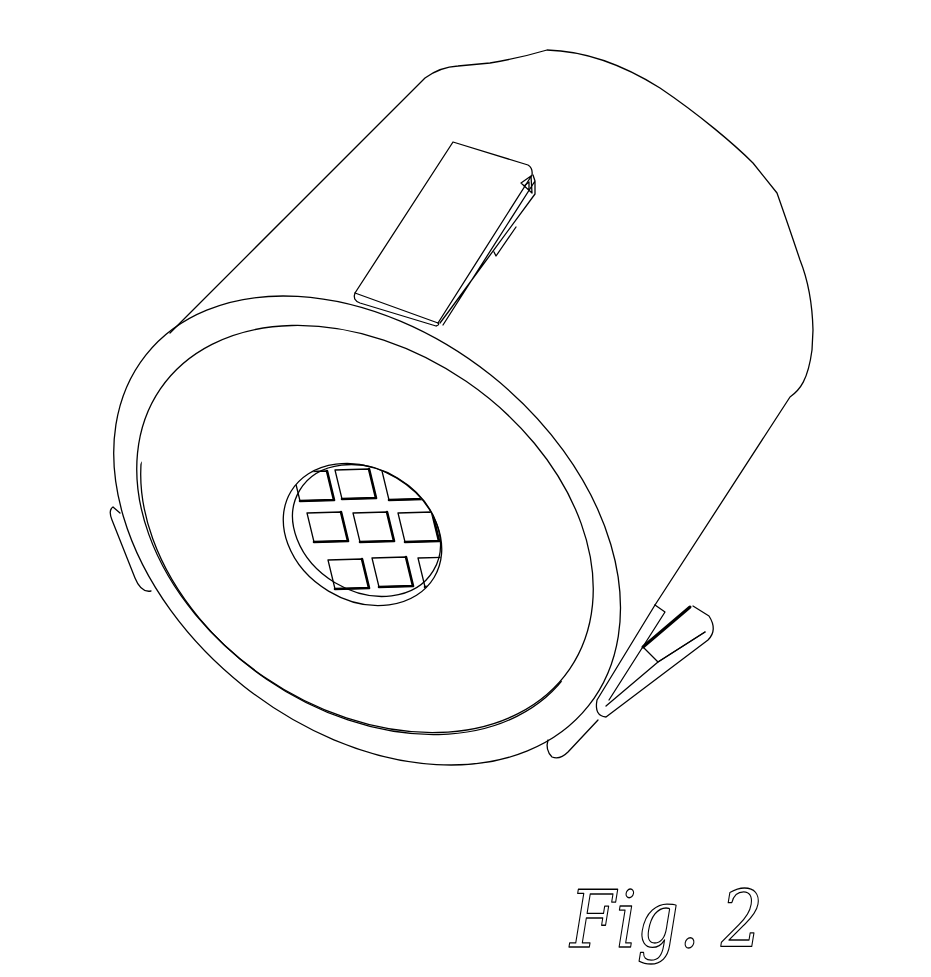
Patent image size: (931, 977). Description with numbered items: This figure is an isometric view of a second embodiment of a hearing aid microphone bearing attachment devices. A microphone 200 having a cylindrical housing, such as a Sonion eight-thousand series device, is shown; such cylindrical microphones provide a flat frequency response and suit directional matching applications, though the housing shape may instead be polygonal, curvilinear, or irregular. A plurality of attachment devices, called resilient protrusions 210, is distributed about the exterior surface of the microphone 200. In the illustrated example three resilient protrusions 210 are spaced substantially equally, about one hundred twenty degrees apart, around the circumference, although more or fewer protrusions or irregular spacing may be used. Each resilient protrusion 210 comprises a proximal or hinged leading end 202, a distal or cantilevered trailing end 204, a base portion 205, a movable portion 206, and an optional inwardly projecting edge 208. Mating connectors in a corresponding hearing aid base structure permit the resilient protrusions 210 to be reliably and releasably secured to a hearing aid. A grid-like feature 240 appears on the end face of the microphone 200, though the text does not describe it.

The microphone 200 is at (630, 357).
The hinged leading end 202 is at (380, 290).
The cantilevered trailing end 204 is at (490, 148).
The base portion 205 is at (497, 257).
The movable portion 206 is at (645, 692).
The inwardly projecting edge 208 is at (702, 615).
The resilient protrusions 210 is at (445, 431).
The grid outlet 240 is at (372, 663).